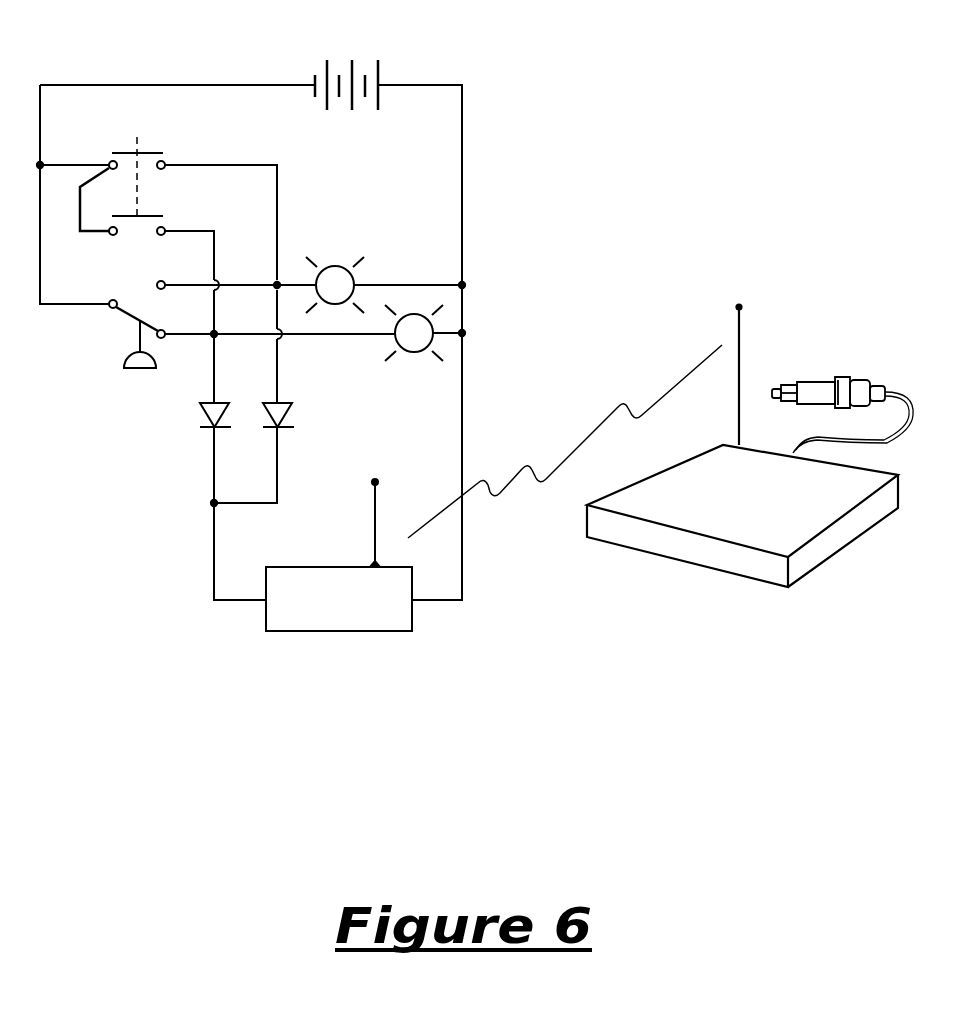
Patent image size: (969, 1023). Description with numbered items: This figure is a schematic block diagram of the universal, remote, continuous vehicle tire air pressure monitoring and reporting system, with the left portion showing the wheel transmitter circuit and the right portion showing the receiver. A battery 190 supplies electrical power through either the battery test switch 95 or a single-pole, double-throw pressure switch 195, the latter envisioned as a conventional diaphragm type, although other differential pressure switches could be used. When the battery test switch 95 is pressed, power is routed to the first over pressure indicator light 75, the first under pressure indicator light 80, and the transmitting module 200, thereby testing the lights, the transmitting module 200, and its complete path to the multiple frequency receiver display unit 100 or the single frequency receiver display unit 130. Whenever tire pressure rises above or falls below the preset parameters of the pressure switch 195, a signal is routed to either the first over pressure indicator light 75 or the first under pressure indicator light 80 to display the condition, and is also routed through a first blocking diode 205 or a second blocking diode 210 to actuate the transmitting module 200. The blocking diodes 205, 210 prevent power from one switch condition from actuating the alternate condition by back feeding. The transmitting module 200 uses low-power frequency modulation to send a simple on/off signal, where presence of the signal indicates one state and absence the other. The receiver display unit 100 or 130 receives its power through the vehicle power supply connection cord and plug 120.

The battery 190 is at (382, 67).
The battery test switch 95 is at (165, 150).
The first over pressure indicator light 75 is at (357, 277).
The first under pressure indicator light 80 is at (423, 350).
The single-pole, double-throw pressure switch 195 is at (140, 371).
The second blocking diode 210 is at (212, 428).
The first blocking diode 205 is at (294, 417).
The transmitting module 200 is at (397, 630).
The multiple frequency receiver display unit 100 is at (742, 504).
The single frequency receiver display unit 130 is at (752, 570).
The vehicle power supply connection cord and plug 120 is at (825, 380).